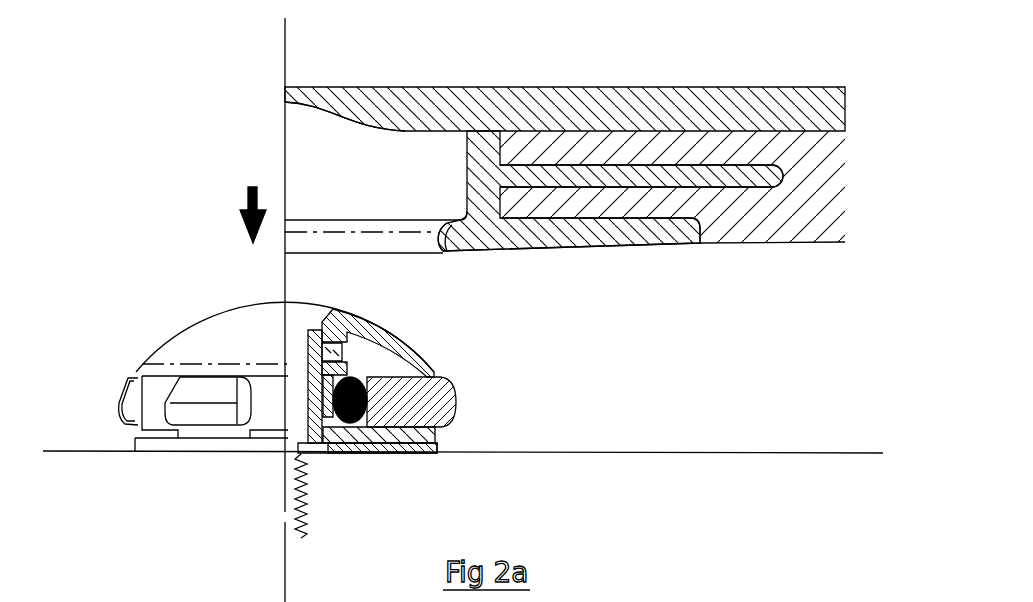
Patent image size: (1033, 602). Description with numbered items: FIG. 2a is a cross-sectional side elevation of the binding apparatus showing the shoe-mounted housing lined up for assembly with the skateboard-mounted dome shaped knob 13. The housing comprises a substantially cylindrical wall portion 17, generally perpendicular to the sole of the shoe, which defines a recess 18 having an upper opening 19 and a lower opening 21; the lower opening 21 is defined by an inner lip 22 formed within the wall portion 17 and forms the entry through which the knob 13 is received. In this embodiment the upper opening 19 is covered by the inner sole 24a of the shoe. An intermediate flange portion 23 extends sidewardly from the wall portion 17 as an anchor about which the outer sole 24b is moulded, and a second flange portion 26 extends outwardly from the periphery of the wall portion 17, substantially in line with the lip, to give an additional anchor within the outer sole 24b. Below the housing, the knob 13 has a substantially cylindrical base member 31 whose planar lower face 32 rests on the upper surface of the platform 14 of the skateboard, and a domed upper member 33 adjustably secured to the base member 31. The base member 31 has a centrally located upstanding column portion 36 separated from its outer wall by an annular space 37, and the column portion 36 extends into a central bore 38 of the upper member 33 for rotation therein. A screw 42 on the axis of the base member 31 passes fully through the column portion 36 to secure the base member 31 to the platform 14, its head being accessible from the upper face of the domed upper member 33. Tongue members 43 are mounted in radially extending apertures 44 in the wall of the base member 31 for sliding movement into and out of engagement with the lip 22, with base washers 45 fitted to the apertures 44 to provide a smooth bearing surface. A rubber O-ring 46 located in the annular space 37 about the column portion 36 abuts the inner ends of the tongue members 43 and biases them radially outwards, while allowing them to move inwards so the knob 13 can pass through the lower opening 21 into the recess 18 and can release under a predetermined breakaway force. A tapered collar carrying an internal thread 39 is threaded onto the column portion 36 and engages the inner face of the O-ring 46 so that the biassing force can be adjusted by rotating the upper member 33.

The dome shaped knob 13 is at (177, 333).
The platform 14 is at (643, 450).
The cylindrical wall portion 17 is at (584, 219).
The recess 18 is at (332, 153).
The upper opening 19 is at (360, 135).
The lower opening 21 is at (388, 243).
The inner lip 22 is at (460, 249).
The intermediate flange portion 23 is at (705, 182).
The inner sole 24a is at (512, 98).
The outer sole 24b is at (777, 233).
The second flange portion 26 is at (540, 240).
The base member 31 is at (195, 438).
The planar lower face 32 is at (152, 452).
The domed upper member 33 is at (217, 330).
The column portion 36 is at (317, 455).
The annular space 37 is at (332, 418).
The central bore 38 is at (352, 325).
The internal thread 39 is at (322, 357).
The screw 42 is at (298, 320).
The tongue members 43 is at (125, 403).
The radially extending apertures 44 is at (422, 450).
The base washers 45 is at (437, 436).
The rubber O-ring 46 is at (367, 437).